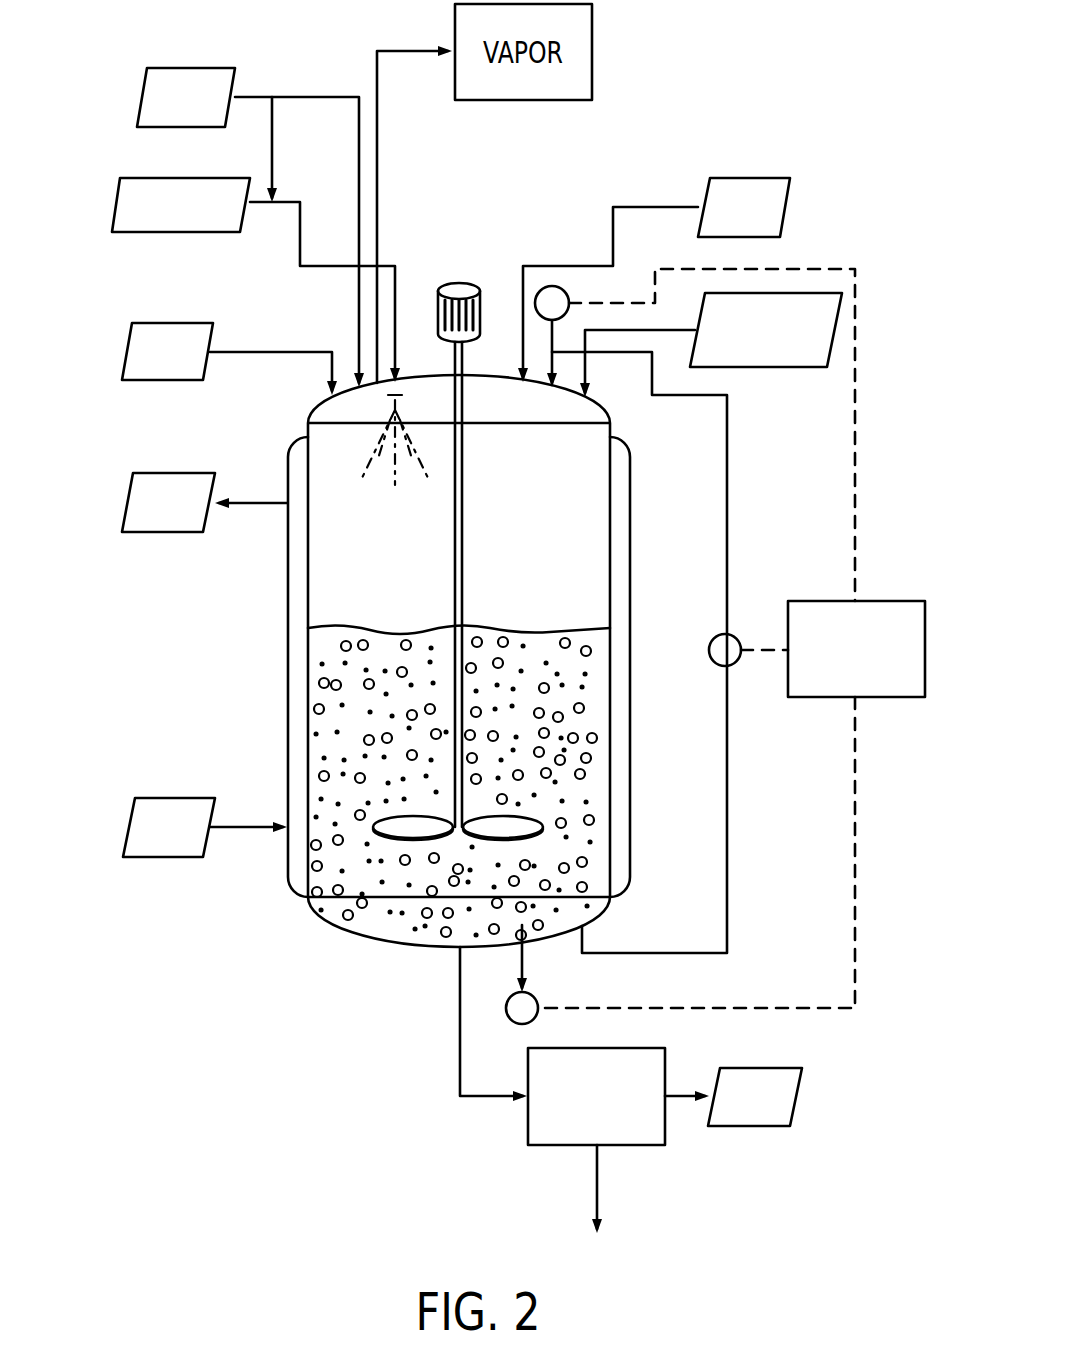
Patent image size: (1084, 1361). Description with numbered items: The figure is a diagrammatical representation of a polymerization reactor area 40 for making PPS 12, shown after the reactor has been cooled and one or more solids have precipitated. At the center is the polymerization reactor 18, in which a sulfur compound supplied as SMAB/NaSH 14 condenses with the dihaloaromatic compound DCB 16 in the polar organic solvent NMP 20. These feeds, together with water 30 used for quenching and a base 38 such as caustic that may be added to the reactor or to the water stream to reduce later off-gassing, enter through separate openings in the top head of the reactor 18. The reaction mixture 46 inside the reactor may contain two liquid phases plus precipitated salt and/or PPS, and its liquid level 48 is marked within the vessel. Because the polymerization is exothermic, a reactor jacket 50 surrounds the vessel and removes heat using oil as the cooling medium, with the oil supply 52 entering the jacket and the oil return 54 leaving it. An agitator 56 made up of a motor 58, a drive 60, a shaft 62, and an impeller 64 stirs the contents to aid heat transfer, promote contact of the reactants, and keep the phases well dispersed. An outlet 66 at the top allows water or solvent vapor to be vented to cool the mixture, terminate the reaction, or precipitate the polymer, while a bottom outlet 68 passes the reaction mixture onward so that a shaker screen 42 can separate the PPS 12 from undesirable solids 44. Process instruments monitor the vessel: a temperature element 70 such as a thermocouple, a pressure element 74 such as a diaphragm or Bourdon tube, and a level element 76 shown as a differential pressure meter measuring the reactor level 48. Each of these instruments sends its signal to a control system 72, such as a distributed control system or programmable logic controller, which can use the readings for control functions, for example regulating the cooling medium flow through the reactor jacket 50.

The PPS 12 is at (597, 738).
The SMAB/NaSH 14 is at (760, 367).
The DCB 16 is at (758, 178).
The polymerization reactor 18 is at (320, 401).
The NMP 20 is at (160, 380).
The water 30 is at (177, 178).
The base 38 is at (188, 67).
The polymerization reactor area 40 is at (832, 228).
The shaker screen 42 is at (597, 1048).
The undesirable solids 44 is at (598, 755).
The reaction mixture 46 is at (348, 735).
The liquid level 48 is at (490, 630).
The reactor jacket 50 is at (623, 600).
The oil supply 52 is at (183, 798).
The oil return 54 is at (170, 473).
The agitator 56 is at (384, 587).
The motor 58 is at (437, 312).
The drive 60 is at (462, 360).
The shaft 62 is at (465, 558).
The impeller 64 is at (408, 835).
The outlet 66 is at (376, 73).
The outlet 68 is at (490, 1098).
The temperature element 70 is at (506, 1010).
The control system 72 is at (820, 697).
The pressure element 74 is at (566, 292).
The level element 76 is at (709, 648).